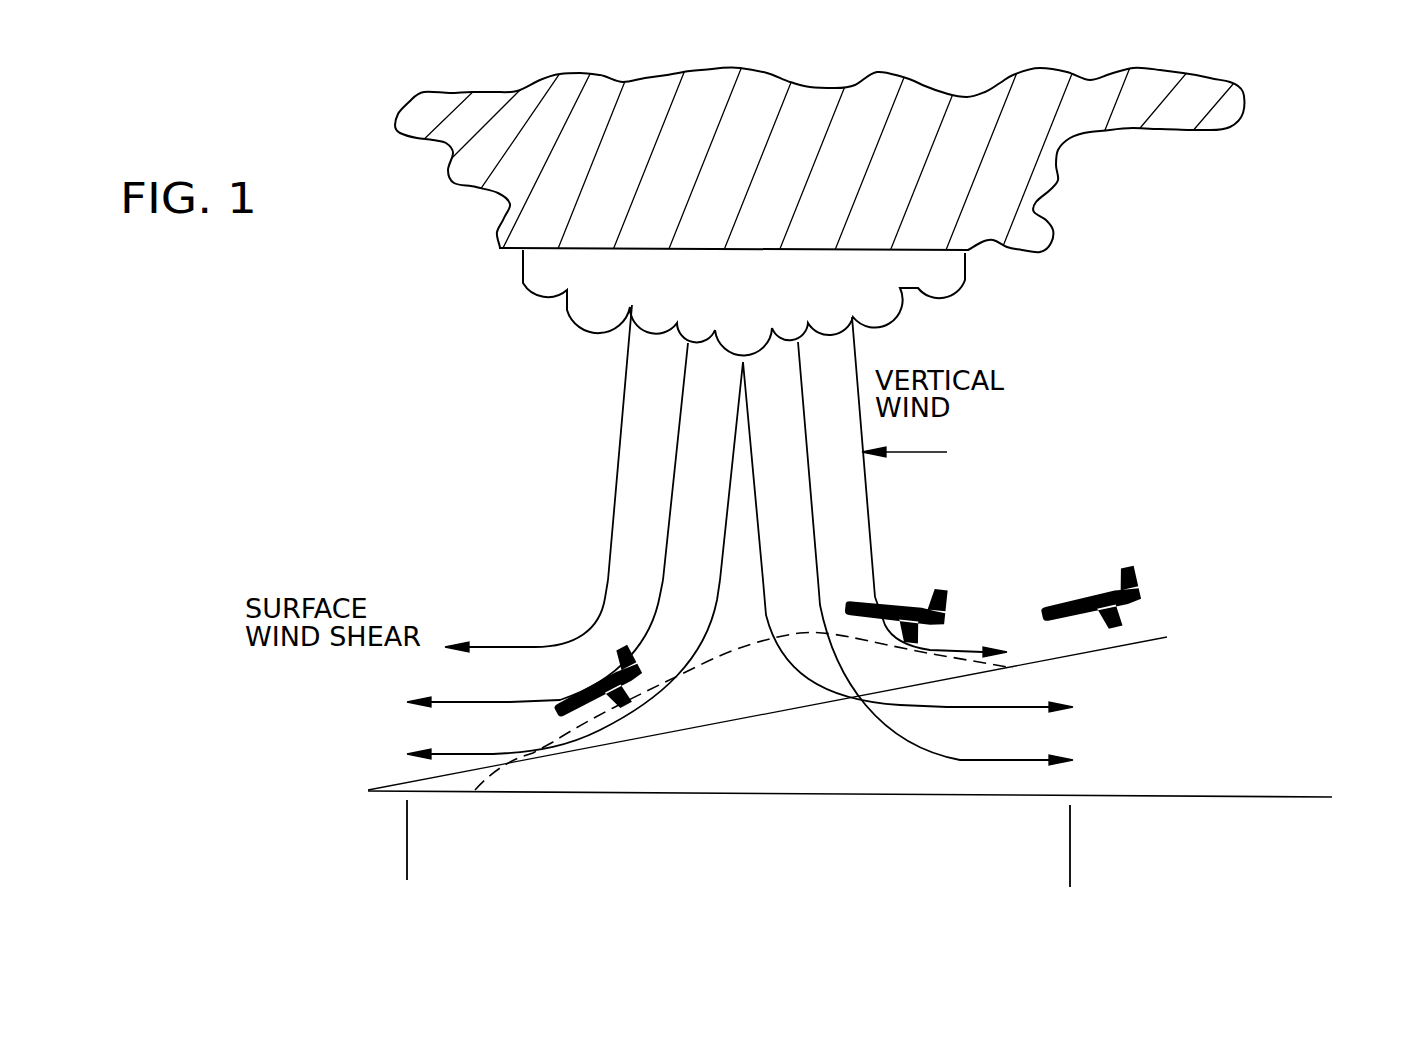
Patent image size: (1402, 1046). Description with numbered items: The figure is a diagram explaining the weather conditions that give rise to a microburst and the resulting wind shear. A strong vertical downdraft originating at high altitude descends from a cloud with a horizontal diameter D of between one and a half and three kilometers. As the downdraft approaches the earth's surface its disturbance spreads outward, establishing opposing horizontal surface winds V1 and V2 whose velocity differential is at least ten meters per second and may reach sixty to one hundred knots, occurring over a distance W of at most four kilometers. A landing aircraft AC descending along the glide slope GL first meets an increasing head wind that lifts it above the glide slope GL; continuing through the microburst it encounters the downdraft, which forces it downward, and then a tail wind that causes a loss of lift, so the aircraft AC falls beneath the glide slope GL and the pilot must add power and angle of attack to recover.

The horizontal diameter D is at (598, 448).
The aircraft AC is at (600, 680).
The glide slope GL is at (1167, 637).
The horizontal surface wind velocity V1 is at (1196, 708).
The horizontal surface wind velocity V2 is at (274, 698).
The distance W is at (1046, 849).